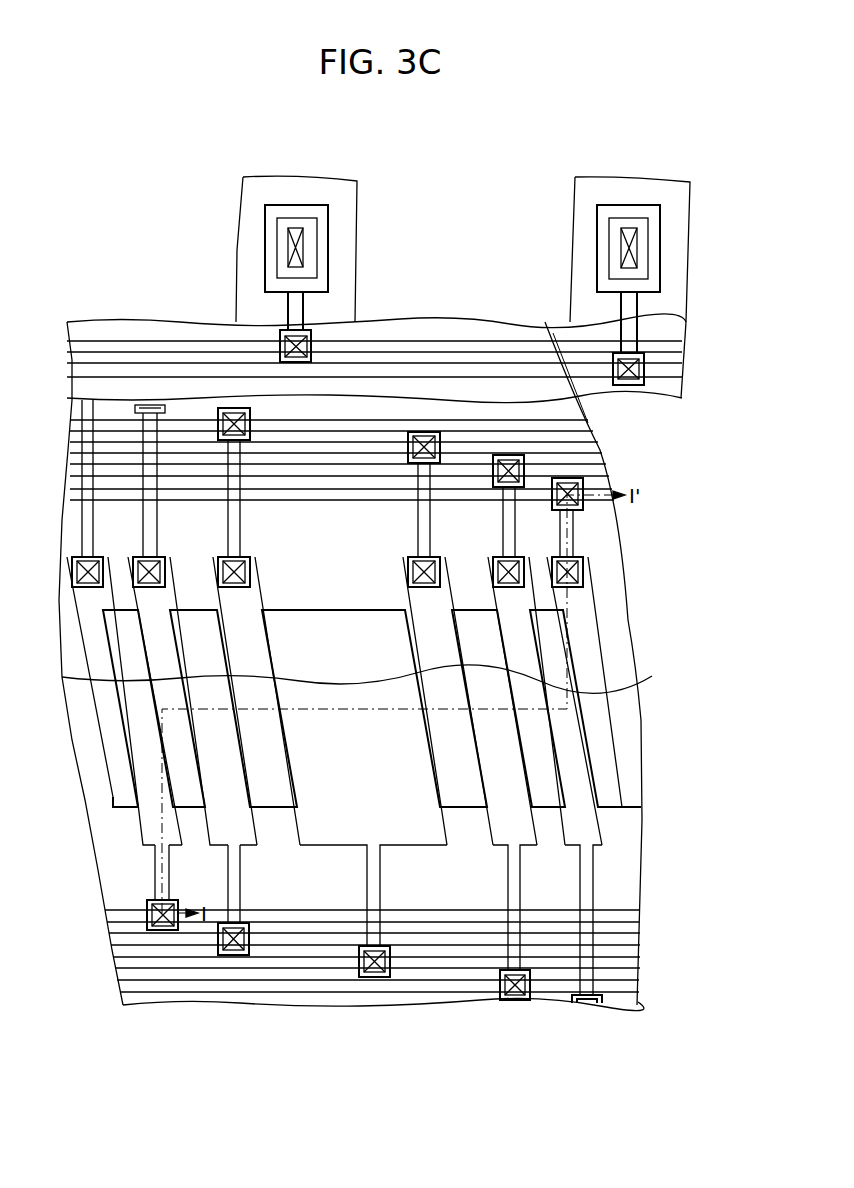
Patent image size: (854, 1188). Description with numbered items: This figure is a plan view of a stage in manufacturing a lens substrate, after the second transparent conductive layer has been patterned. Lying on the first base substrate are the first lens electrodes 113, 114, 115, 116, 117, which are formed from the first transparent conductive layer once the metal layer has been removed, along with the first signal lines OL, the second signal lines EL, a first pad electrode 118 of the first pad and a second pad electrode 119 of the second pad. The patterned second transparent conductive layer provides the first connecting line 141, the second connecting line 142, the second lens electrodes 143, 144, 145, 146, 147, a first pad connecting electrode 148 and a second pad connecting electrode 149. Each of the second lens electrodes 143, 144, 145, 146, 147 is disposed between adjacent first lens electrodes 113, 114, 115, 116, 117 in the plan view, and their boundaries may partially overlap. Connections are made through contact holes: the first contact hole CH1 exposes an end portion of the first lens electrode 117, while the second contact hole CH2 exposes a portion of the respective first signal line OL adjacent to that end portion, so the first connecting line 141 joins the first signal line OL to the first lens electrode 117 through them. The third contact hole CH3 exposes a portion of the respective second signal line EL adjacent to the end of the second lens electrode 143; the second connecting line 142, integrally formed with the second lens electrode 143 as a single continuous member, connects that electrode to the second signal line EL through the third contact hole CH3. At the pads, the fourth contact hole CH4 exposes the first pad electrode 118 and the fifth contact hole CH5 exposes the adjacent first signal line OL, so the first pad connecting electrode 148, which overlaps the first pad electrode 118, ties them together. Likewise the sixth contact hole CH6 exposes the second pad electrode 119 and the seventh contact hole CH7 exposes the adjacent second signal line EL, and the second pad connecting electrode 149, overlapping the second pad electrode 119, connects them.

The first lens electrode 113 is at (200, 810).
The first lens electrode 114 is at (290, 810).
The first lens electrode 115 is at (457, 810).
The first lens electrode 116 is at (552, 810).
The first lens electrode 117 is at (640, 795).
The first pad electrode 118 is at (306, 218).
The second pad electrode 119 is at (636, 218).
The first connecting line 141 is at (573, 548).
The second connecting line 142 is at (150, 888).
The second lens electrode 143 is at (147, 860).
The second lens electrode 144 is at (252, 853).
The second lens electrode 145 is at (340, 845).
The second lens electrode 146 is at (492, 845).
The second lens electrode 147 is at (603, 847).
The first pad connecting electrode 148 is at (329, 209).
The second pad connecting electrode 149 is at (661, 212).
The first contact hole CH1 is at (592, 573).
The second contact hole CH2 is at (583, 505).
The third contact hole CH3 is at (147, 914).
The fourth contact hole CH4 is at (303, 241).
The fifth contact hole CH5 is at (310, 346).
The sixth contact hole CH6 is at (637, 241).
The seventh contact hole CH7 is at (645, 372).
The first signal lines OL is at (682, 347).
The second signal lines EL is at (682, 371).